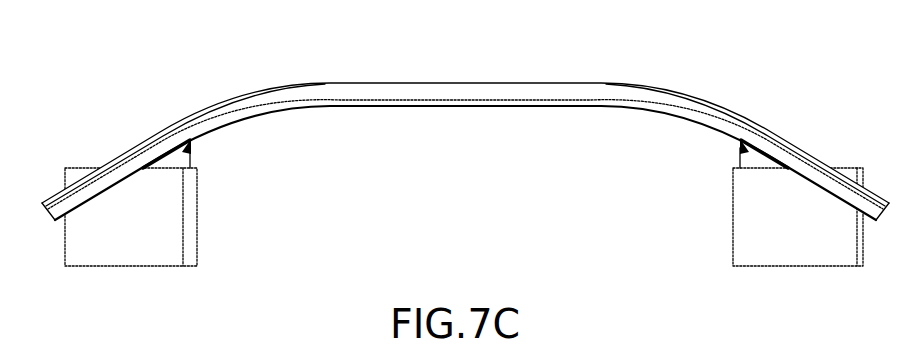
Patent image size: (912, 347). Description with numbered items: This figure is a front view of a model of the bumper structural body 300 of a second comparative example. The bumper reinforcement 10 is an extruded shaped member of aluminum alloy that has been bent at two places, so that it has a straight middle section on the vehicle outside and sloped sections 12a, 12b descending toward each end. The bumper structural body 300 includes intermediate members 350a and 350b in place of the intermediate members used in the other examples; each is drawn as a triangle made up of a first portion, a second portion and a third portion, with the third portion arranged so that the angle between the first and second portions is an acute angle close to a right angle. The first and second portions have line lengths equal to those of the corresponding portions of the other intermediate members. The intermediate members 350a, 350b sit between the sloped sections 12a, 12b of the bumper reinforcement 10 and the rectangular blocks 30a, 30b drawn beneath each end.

The bumper reinforcement 10 is at (460, 114).
The sloped section 12a is at (103, 181).
The sloped section 12b is at (817, 180).
The first support member 30a is at (158, 255).
The second support member 30b is at (774, 255).
The bumper structural body 300 is at (460, 175).
The intermediate member 350a is at (195, 130).
The intermediate member 350b is at (729, 125).